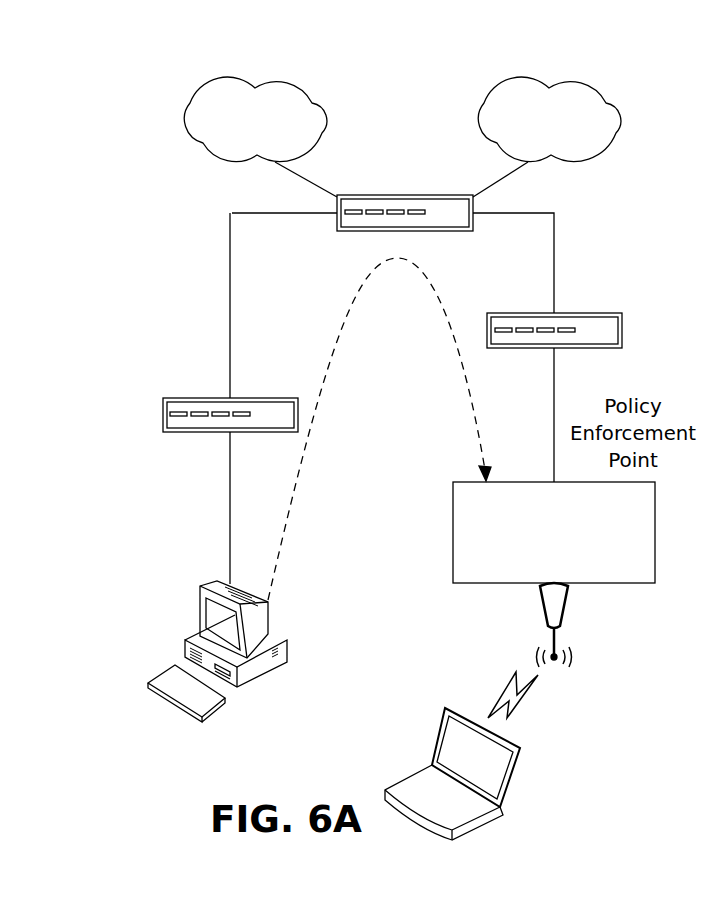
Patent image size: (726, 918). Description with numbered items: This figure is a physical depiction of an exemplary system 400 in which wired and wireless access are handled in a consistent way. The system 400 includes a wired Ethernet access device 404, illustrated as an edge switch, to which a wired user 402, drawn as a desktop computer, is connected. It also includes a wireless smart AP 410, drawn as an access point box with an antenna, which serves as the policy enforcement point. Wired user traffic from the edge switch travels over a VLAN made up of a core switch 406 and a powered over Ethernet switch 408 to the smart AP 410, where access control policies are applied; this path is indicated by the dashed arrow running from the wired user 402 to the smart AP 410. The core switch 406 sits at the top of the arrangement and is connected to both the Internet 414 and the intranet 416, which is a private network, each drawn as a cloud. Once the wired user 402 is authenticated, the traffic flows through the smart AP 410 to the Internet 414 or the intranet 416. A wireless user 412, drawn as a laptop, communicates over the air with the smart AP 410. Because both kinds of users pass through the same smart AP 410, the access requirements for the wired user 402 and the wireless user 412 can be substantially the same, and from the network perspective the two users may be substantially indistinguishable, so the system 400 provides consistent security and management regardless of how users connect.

The system 400 is at (182, 19).
The wired user 402 is at (202, 586).
The wired Ethernet access device 404 is at (192, 433).
The core switch 406 is at (352, 231).
The powered over Ethernet (PoE) switch 408 is at (590, 348).
The smart AP 410 is at (567, 598).
The wireless user 412 is at (522, 745).
The Internet 414 is at (278, 76).
The intranet 416 is at (532, 76).